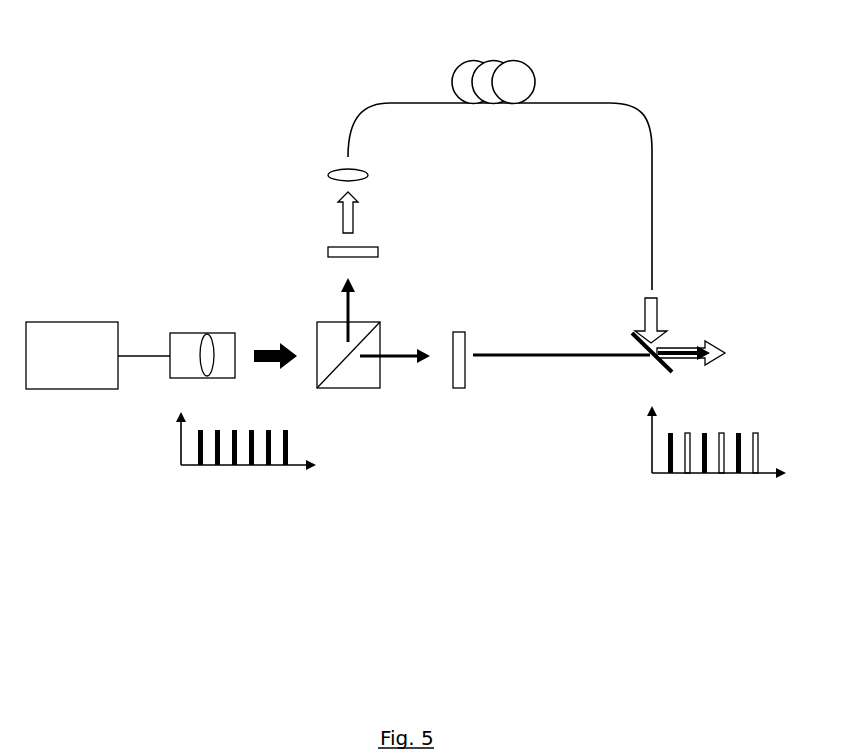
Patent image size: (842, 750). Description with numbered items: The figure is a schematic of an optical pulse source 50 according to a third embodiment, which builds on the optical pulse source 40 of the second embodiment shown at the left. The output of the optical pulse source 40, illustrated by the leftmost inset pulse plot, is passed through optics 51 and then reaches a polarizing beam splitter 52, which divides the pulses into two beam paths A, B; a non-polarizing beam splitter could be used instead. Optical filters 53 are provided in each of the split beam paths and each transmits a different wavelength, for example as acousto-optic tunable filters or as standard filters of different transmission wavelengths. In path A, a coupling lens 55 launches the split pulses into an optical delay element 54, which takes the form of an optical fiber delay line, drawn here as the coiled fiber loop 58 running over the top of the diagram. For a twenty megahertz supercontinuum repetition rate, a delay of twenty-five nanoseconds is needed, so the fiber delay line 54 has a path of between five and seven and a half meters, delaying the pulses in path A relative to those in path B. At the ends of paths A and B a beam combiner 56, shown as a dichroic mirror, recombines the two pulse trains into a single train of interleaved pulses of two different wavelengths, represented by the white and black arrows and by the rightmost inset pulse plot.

The optical pulse source 50 is at (206, 92).
The optical pulse source 40 is at (67, 320).
The optics 51 is at (177, 333).
The polarizing beam splitter 52 is at (332, 322).
The optical filters 53 is at (458, 332).
The optical delay element 54 is at (463, 60).
The coupling lens 55 is at (330, 172).
The beam combiner 56 is at (660, 372).
The optical fiber delay line 58 is at (581, 72).
The beam path A is at (682, 147).
The beam path B is at (503, 415).